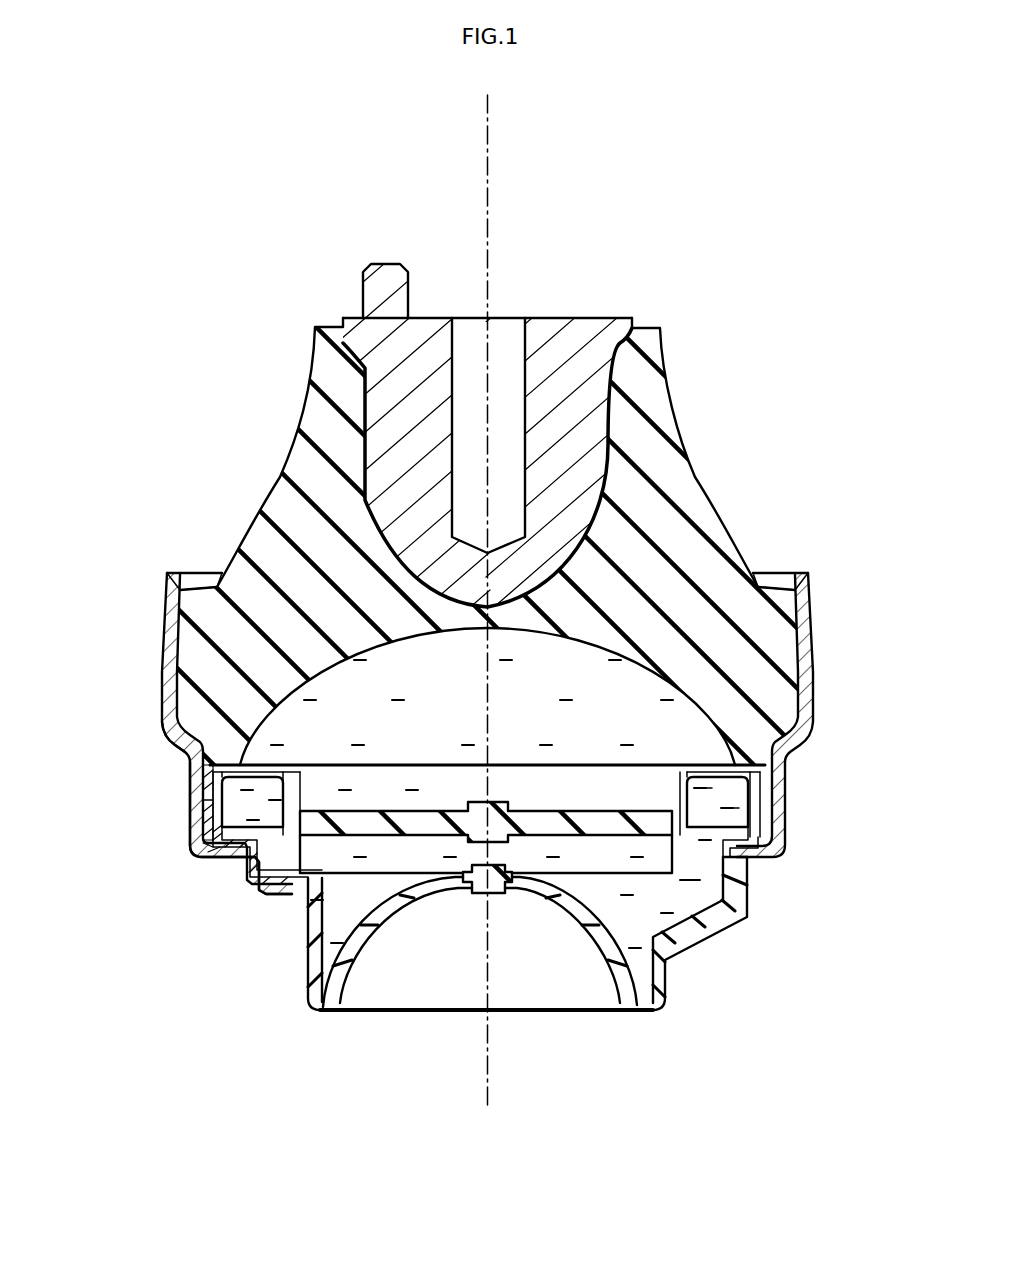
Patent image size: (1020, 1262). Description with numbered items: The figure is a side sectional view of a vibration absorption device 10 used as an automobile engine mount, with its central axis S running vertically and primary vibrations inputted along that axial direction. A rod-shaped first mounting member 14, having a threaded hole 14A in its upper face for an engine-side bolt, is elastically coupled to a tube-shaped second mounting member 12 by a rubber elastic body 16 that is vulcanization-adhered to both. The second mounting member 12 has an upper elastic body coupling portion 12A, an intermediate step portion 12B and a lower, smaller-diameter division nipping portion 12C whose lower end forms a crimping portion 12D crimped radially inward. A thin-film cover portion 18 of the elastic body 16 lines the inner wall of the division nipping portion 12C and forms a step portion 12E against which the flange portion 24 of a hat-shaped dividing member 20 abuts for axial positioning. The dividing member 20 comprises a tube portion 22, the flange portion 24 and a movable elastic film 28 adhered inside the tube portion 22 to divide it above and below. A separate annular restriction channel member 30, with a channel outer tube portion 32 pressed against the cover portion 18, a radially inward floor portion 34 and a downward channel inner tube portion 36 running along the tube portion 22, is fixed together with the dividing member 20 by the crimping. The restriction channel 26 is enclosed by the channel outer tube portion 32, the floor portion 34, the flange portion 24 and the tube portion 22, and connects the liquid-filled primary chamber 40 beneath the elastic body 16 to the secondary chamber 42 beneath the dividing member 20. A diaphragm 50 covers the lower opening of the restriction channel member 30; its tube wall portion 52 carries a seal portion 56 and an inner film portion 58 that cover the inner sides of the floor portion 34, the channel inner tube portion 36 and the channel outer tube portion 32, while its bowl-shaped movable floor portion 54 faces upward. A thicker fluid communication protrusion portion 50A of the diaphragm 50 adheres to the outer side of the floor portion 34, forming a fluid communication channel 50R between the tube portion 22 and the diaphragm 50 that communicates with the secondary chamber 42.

The vibration absorption device 10 is at (194, 202).
The central axis S is at (488, 165).
The second mounting member 12 is at (158, 683).
The elastic body coupling portion 12A is at (165, 625).
The step portion 12B is at (186, 750).
The division nipping portion 12C is at (198, 794).
The crimping portion 12D is at (208, 862).
The step portion 12E is at (234, 778).
The first mounting member 14 is at (586, 316).
The threaded hole 14A is at (516, 358).
The elastic body 16 is at (722, 500).
The cover portion 18 is at (207, 812).
The dividing member 20 is at (722, 758).
The tube portion 22 is at (690, 806).
The flange portion 24 is at (700, 766).
The restriction channel 26 is at (722, 797).
The movable elastic film 28 is at (440, 810).
The restriction channel member 30 is at (205, 800).
The channel outer tube portion 32 is at (213, 836).
The floor portion 34 is at (232, 850).
The channel inner tube portion 36 is at (254, 884).
The primary chamber 40 is at (451, 676).
The secondary chamber 42 is at (361, 906).
The diaphragm 50 is at (310, 985).
The fluid communication protrusion portion 50A is at (750, 898).
The fluid communication channel 50R is at (708, 862).
The tube wall portion 52 is at (310, 960).
The movable floor portion 54 is at (440, 890).
The seal portion 56 is at (292, 896).
The inner film portion 58 is at (208, 848).